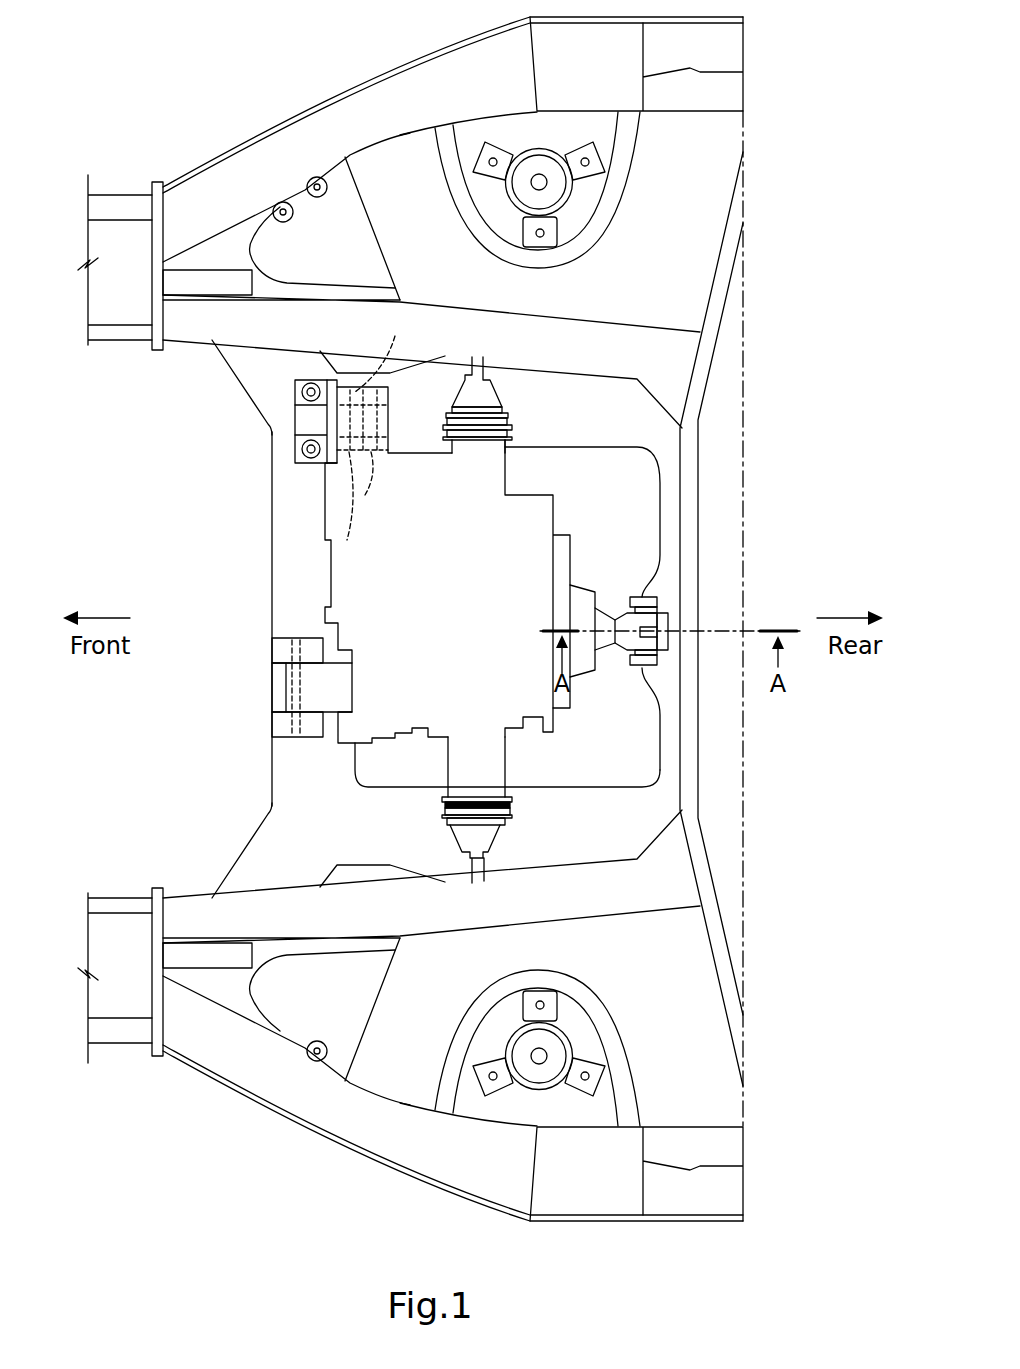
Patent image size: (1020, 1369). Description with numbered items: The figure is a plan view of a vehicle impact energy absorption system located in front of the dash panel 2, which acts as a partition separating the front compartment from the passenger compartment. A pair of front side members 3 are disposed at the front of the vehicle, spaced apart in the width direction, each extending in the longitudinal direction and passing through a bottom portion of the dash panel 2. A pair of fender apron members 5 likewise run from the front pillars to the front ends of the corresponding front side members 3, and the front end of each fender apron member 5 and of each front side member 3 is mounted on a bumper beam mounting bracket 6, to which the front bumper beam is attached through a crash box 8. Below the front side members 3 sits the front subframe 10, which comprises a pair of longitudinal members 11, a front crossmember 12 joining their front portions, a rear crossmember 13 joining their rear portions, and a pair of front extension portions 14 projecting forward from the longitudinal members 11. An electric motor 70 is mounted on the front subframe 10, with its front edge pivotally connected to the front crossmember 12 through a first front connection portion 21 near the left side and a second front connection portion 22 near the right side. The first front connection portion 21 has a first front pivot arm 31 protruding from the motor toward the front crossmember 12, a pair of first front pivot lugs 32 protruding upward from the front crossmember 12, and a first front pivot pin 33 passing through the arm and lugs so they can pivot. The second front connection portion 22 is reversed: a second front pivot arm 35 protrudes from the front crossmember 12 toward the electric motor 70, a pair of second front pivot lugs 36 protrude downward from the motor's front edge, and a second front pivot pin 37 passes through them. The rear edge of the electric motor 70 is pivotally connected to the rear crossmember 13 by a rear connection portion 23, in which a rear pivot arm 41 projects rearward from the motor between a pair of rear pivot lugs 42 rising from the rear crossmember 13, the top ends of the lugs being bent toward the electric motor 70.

The dash panel 2 is at (687, 527).
The front side member 3 is at (323, 318).
The fender apron member 5 is at (270, 130).
The bumper beam mounting bracket 6 is at (170, 205).
The crash box 8 is at (122, 232).
The front subframe 10 is at (264, 607).
The longitudinal member 11 is at (398, 812).
The front crossmember 12 is at (285, 493).
The rear crossmember 13 is at (668, 485).
The front extension portion 14 is at (250, 365).
The first front connection portion 21 is at (258, 693).
The second front connection portion 22 is at (287, 447).
The rear connection portion 23 is at (703, 615).
The first front pivot arm 31 is at (312, 683).
The first front pivot lug 32 is at (282, 647).
The first front pivot pin 33 is at (300, 703).
The second front pivot arm 35 is at (310, 420).
The second front pivot lug 36 is at (374, 439).
The second front pivot pin 37 is at (365, 485).
The rear pivot arm 41 is at (628, 622).
The rear pivot lug 42 is at (650, 603).
The electric motor 70 is at (380, 582).